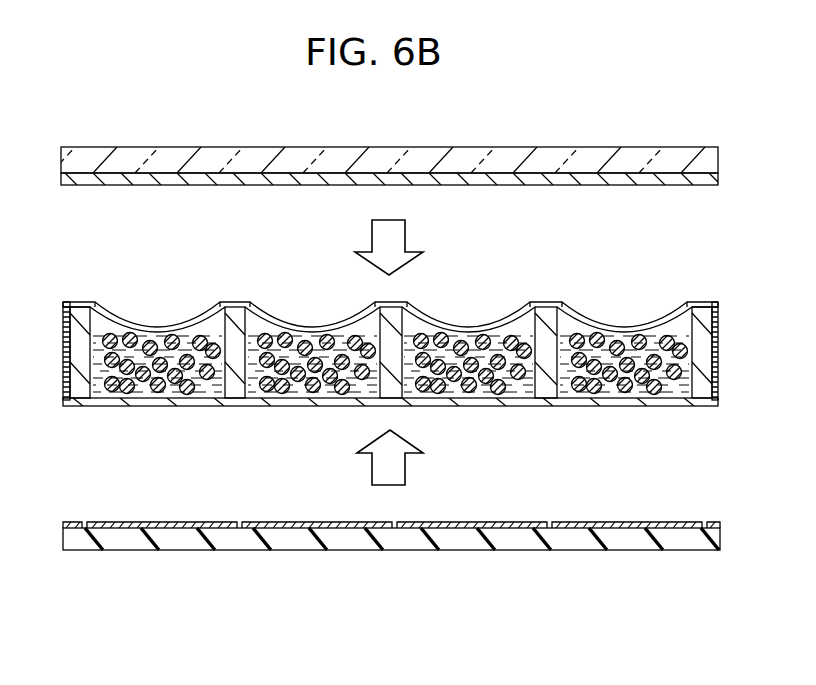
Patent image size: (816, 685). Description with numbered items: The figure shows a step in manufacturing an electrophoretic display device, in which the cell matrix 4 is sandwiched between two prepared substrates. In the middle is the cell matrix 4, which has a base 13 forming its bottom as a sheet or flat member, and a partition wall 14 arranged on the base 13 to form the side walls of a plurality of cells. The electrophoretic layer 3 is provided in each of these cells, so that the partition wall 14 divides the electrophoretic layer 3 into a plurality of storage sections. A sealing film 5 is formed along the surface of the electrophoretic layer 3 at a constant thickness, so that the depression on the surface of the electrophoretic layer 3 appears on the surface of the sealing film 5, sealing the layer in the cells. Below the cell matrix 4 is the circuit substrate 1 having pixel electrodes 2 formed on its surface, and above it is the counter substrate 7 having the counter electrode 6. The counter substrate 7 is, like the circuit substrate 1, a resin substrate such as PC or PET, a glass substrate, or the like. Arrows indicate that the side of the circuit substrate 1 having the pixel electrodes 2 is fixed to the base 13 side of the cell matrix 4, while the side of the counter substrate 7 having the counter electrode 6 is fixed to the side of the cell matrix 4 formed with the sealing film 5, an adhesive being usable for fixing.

The circuit substrate 1 is at (630, 545).
The pixel electrodes 2 is at (663, 522).
The electrophoretic layer 3 is at (485, 385).
The cell matrix 4 is at (618, 462).
The sealing film 5 is at (470, 330).
The counter electrode 6 is at (617, 178).
The counter substrate 7 is at (633, 157).
The base 13 is at (597, 398).
The partition wall 14 is at (551, 383).